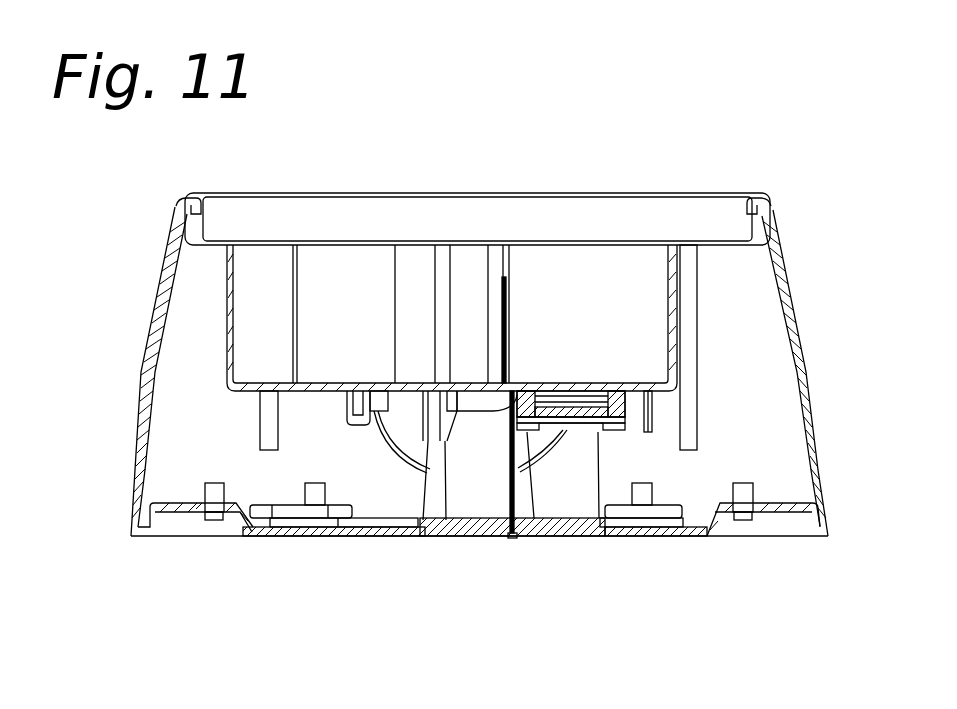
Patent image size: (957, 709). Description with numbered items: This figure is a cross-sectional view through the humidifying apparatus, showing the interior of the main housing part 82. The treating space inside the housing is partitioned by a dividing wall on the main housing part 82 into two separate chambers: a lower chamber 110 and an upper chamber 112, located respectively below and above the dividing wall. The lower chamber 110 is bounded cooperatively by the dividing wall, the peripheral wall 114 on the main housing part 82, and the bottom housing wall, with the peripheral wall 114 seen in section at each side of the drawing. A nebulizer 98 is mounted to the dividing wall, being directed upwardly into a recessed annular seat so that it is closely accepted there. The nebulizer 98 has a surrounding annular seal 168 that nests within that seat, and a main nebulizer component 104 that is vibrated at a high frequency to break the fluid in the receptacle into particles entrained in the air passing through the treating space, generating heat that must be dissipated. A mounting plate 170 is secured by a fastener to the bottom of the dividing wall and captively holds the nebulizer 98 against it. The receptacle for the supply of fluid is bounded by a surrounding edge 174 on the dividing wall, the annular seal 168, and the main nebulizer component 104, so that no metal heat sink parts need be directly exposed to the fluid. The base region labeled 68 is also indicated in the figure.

The base plate 68 is at (347, 537).
The main housing part 82 is at (335, 288).
The nebulizer 98 is at (575, 398).
The component 104 is at (631, 259).
The chamber 110 is at (183, 460).
The chamber 112 is at (263, 275).
The peripheral wall 114 is at (813, 445).
The annular seal 168 is at (553, 392).
The mounting plate 170 is at (608, 430).
The surrounding edge 174 is at (606, 388).